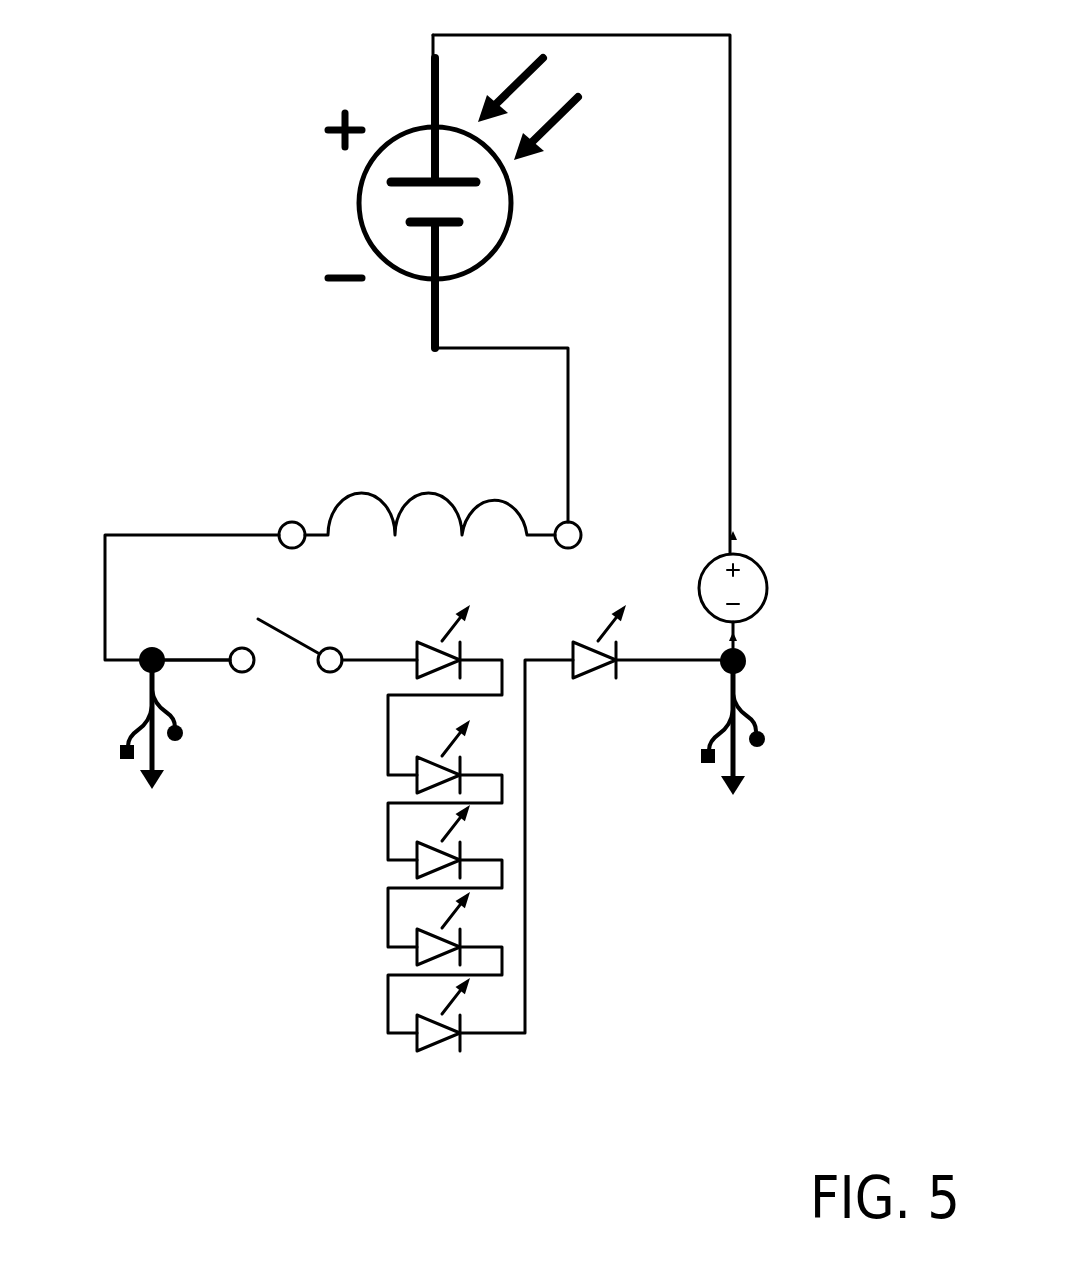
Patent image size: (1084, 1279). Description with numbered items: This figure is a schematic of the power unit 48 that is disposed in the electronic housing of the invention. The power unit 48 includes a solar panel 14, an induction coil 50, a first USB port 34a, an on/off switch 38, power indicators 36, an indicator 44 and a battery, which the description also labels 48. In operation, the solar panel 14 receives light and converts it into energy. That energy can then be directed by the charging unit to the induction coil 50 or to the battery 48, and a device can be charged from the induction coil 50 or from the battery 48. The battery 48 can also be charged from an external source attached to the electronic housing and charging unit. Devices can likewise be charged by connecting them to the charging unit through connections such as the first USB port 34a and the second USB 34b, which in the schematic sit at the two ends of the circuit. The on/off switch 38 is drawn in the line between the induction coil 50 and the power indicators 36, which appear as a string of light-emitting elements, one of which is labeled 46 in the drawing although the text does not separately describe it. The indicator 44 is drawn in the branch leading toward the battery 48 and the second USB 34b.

The solar panel 14 is at (433, 90).
The power unit 48 is at (700, 586).
The induction coil 50 is at (350, 498).
The switch 38 is at (238, 647).
The power indicators 36 is at (432, 828).
The LED 46 is at (415, 658).
The indicator 44 is at (572, 658).
The first USB port 34a is at (118, 752).
The second USB 34b is at (700, 762).